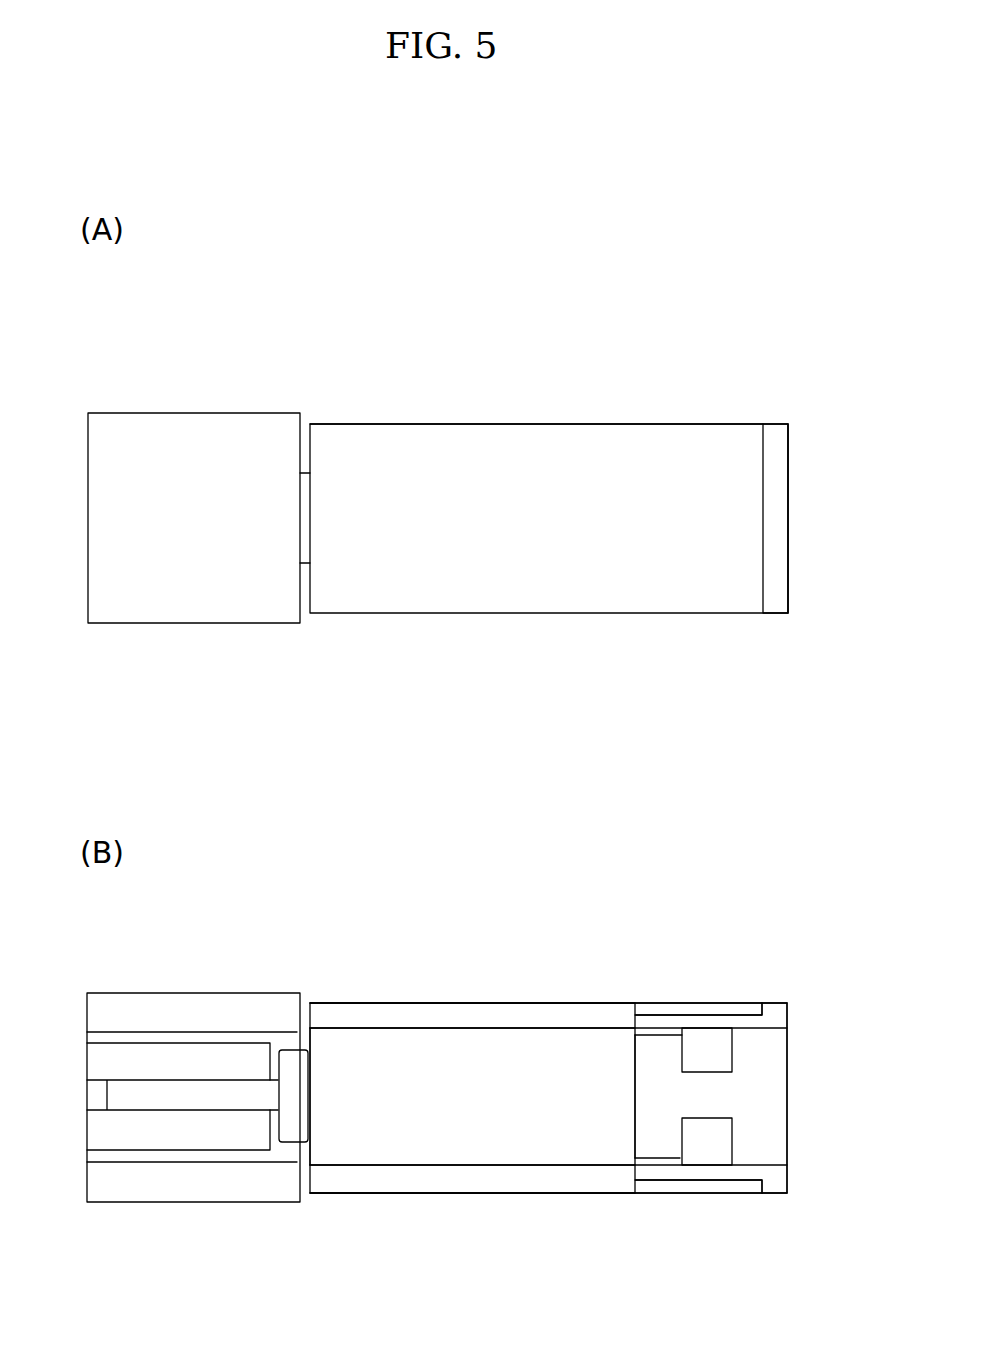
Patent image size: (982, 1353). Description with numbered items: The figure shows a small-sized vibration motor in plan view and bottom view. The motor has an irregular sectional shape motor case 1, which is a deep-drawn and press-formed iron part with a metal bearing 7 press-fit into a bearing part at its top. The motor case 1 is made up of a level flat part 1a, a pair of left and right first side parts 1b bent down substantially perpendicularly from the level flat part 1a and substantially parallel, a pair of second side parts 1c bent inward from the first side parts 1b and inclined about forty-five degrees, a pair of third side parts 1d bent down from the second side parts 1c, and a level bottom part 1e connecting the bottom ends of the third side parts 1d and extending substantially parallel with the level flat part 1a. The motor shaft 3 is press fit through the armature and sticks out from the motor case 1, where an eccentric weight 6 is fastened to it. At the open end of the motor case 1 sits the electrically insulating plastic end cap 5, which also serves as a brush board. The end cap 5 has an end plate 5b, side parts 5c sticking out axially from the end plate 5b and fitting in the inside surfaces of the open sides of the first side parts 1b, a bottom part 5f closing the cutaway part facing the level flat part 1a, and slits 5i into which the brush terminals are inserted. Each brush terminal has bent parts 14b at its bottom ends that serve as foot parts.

The motor case 1 is at (643, 413).
The level flat part 1a is at (530, 440).
The first side part 1b is at (372, 1002).
The second side part 1c is at (443, 1020).
The third side part 1d is at (557, 1027).
The level bottom part 1e is at (493, 1138).
The motor shaft 3 is at (107, 1095).
The plastic end cap 5 is at (801, 535).
The end plate 5b is at (785, 578).
The side part 5c is at (785, 1000).
The bottom part 5f is at (667, 1133).
The slit 5i is at (660, 1032).
The eccentric weight 6 is at (207, 422).
The metal bearing 7 is at (293, 1052).
The bent part 14b is at (720, 1052).